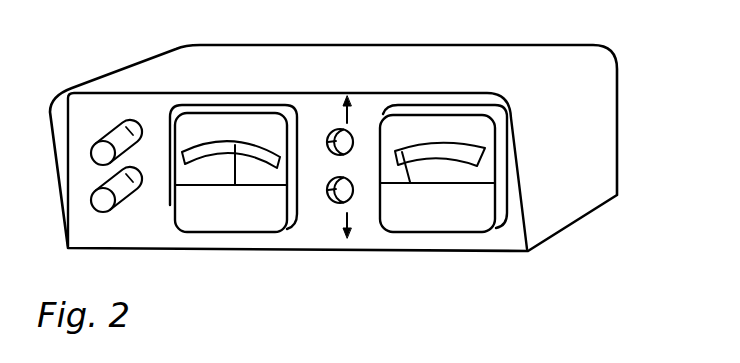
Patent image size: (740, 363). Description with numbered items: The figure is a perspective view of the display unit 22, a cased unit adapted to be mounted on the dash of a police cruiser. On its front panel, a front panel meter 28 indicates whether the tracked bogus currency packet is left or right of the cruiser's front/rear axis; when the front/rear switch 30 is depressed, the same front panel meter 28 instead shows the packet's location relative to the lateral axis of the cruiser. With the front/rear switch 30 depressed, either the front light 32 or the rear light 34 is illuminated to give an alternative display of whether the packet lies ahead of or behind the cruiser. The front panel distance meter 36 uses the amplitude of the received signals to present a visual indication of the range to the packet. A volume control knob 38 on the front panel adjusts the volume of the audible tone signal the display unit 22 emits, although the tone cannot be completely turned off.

The display unit 22 is at (410, 45).
The front panel meter 28 is at (243, 238).
The front/rear switch 30 is at (118, 131).
The front light 32 is at (331, 139).
The rear light 34 is at (331, 191).
The front panel distance meter 36 is at (450, 240).
The volume control knob 38 is at (138, 203).